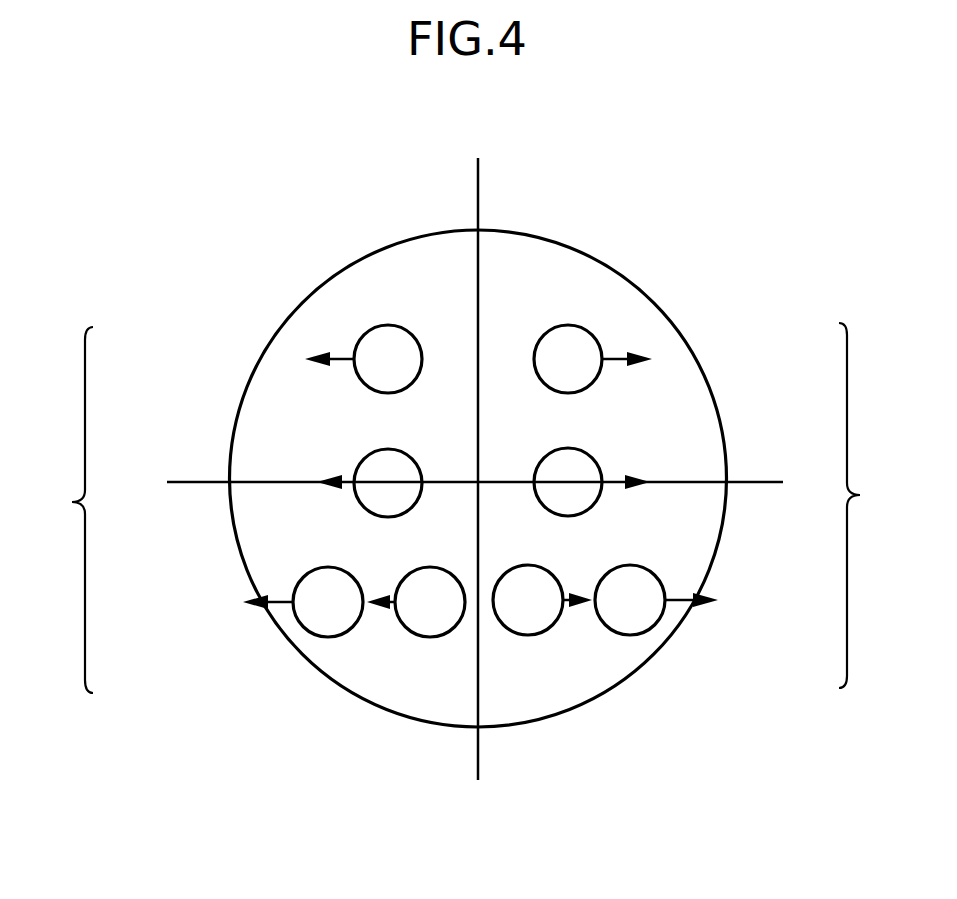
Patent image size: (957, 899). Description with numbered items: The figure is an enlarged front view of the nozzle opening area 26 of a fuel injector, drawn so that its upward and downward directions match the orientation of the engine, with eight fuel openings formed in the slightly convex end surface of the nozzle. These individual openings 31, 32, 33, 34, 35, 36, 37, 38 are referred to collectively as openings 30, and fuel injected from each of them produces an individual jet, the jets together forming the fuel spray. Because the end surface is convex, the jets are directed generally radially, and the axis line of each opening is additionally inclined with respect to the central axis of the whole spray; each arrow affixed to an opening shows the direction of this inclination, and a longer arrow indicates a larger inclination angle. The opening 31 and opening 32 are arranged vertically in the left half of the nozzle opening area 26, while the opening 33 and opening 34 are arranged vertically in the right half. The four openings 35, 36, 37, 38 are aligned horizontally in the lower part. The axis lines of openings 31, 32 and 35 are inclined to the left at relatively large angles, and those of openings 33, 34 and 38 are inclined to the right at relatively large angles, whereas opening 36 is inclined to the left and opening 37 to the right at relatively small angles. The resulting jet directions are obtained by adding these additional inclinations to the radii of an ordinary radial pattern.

The nozzle opening area 26 is at (620, 270).
The openings 30 is at (464, 508).
The opening 31 is at (356, 347).
The opening 32 is at (362, 468).
The opening 33 is at (592, 334).
The opening 34 is at (598, 460).
The opening 35 is at (300, 588).
The opening 36 is at (405, 625).
The opening 37 is at (558, 628).
The opening 38 is at (655, 574).